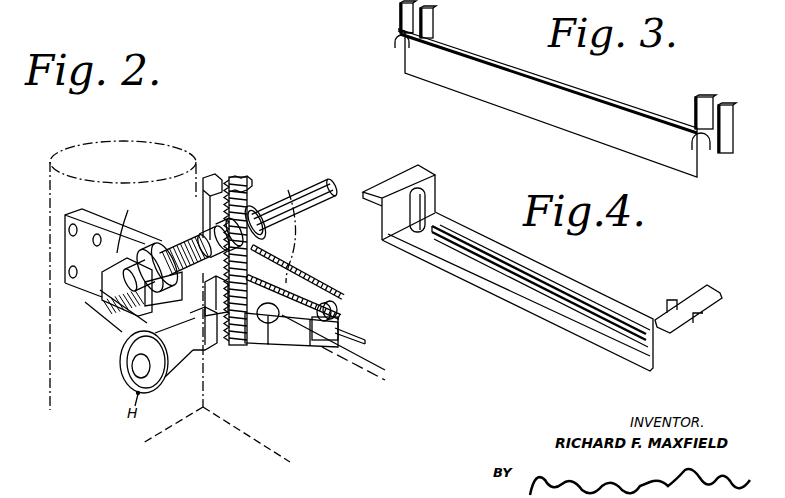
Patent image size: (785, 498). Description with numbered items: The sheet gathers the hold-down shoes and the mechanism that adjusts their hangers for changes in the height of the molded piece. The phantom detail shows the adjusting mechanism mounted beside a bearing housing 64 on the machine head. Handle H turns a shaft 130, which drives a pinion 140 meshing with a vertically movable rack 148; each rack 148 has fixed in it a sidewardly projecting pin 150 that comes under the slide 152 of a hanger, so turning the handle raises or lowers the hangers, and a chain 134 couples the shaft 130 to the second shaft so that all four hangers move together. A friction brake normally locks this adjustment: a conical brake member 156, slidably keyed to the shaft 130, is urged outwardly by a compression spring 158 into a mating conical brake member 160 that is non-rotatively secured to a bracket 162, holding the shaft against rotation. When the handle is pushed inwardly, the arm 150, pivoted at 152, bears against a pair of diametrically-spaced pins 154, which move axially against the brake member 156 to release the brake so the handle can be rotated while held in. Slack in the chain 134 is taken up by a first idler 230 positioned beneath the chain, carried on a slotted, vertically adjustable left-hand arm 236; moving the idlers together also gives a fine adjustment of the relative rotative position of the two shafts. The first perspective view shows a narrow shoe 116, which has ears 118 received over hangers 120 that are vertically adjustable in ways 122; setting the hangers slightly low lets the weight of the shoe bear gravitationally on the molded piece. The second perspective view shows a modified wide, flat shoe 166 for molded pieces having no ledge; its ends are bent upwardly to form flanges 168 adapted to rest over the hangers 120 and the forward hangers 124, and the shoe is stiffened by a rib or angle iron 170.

In FIG. 2, the bearing housing 64 is at (162, 153).
In FIG. 2, the bracket 162 is at (70, 253).
In FIG. 2, the pins 154 is at (108, 290).
In FIG. 2, the mating conical brake member 160 is at (157, 240).
In FIG. 2, the conical brake member 156 is at (178, 246).
In FIG. 2, the compression spring 158 is at (212, 217).
In FIG. 2, the pinion 140 is at (260, 215).
In FIG. 2, the shaft 130 is at (318, 183).
In FIG. 2, the rack 148 is at (242, 348).
In FIG. 2, the chain 134 is at (326, 288).
In FIG. 2, the first idler 230 is at (337, 306).
In FIG. 2, the left-hand arm 236 is at (340, 326).
In FIG. 2, the forward hanger 124 is at (272, 324).
In FIG. 2, the slide 152 is at (283, 363).
In FIG. 2, the pin 150 is at (143, 324).
In FIG. 3, the shoe 116 is at (593, 106).
In FIG. 3, the ears 118 is at (398, 31).
In FIG. 3, the hangers 120 is at (398, 48).
In FIG. 3, the ways 122 is at (433, 30).
In FIG. 4, the wide flat shoe 166 is at (622, 303).
In FIG. 4, the flanges 168 is at (393, 177).
In FIG. 4, the rib or angle iron 170 is at (547, 282).